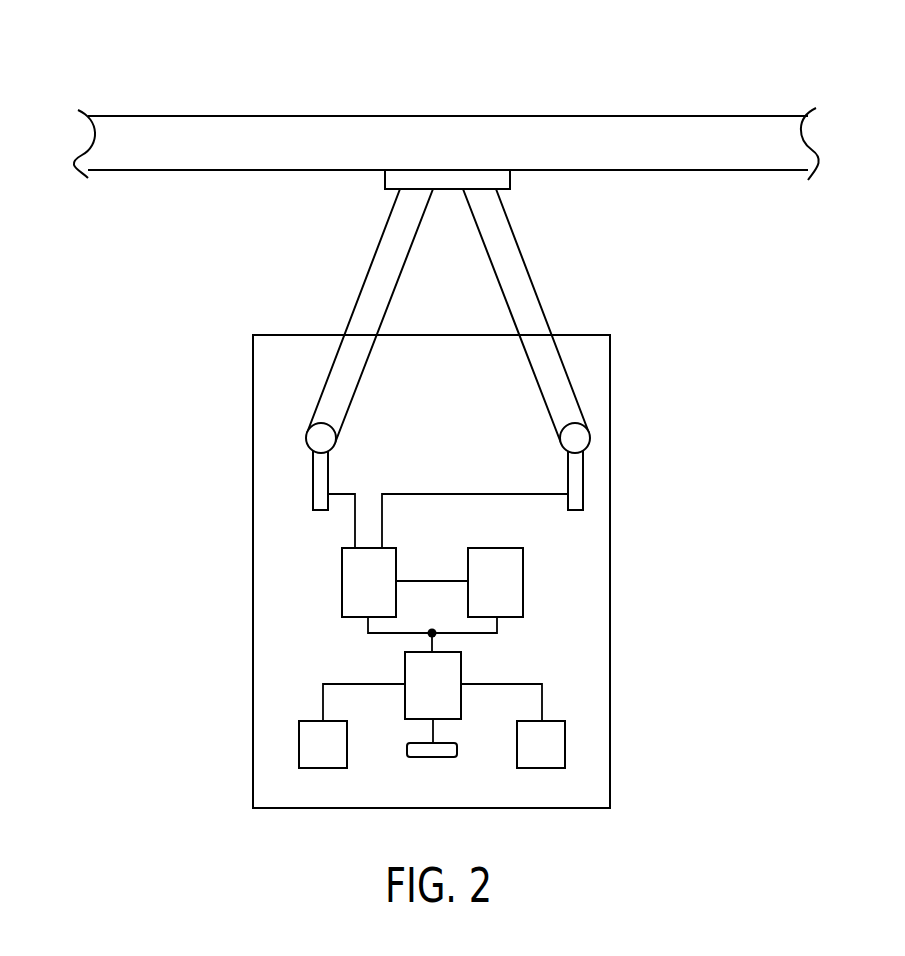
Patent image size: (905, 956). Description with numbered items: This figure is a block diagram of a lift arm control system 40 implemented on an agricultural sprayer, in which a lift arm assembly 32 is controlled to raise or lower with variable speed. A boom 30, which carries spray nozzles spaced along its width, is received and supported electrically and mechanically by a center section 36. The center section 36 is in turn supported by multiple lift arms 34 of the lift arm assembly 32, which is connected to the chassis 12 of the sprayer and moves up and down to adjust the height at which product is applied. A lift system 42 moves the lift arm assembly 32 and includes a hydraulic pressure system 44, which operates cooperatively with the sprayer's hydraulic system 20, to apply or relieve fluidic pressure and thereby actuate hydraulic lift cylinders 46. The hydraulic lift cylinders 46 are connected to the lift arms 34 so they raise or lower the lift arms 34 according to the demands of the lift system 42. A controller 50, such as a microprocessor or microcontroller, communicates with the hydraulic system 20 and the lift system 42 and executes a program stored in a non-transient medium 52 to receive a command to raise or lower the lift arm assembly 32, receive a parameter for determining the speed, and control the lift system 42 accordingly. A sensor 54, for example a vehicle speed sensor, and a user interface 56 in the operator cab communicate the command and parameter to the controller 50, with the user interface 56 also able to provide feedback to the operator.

The lift arm control system 40 is at (698, 50).
The boom 30 is at (543, 127).
The center section 36 is at (466, 178).
The lift arm assembly 32 is at (608, 289).
The lift arms 34 is at (380, 272).
The chassis 12 is at (611, 381).
The lift system 42 is at (294, 612).
The hydraulic lift cylinders 46 is at (318, 443).
The hydraulic pressure system 44 is at (383, 593).
The hydraulic system 20 is at (510, 593).
The controller 50 is at (447, 696).
The sensor 54 is at (338, 758).
The user interface 56 is at (556, 758).
The non-transient medium 52 is at (432, 757).